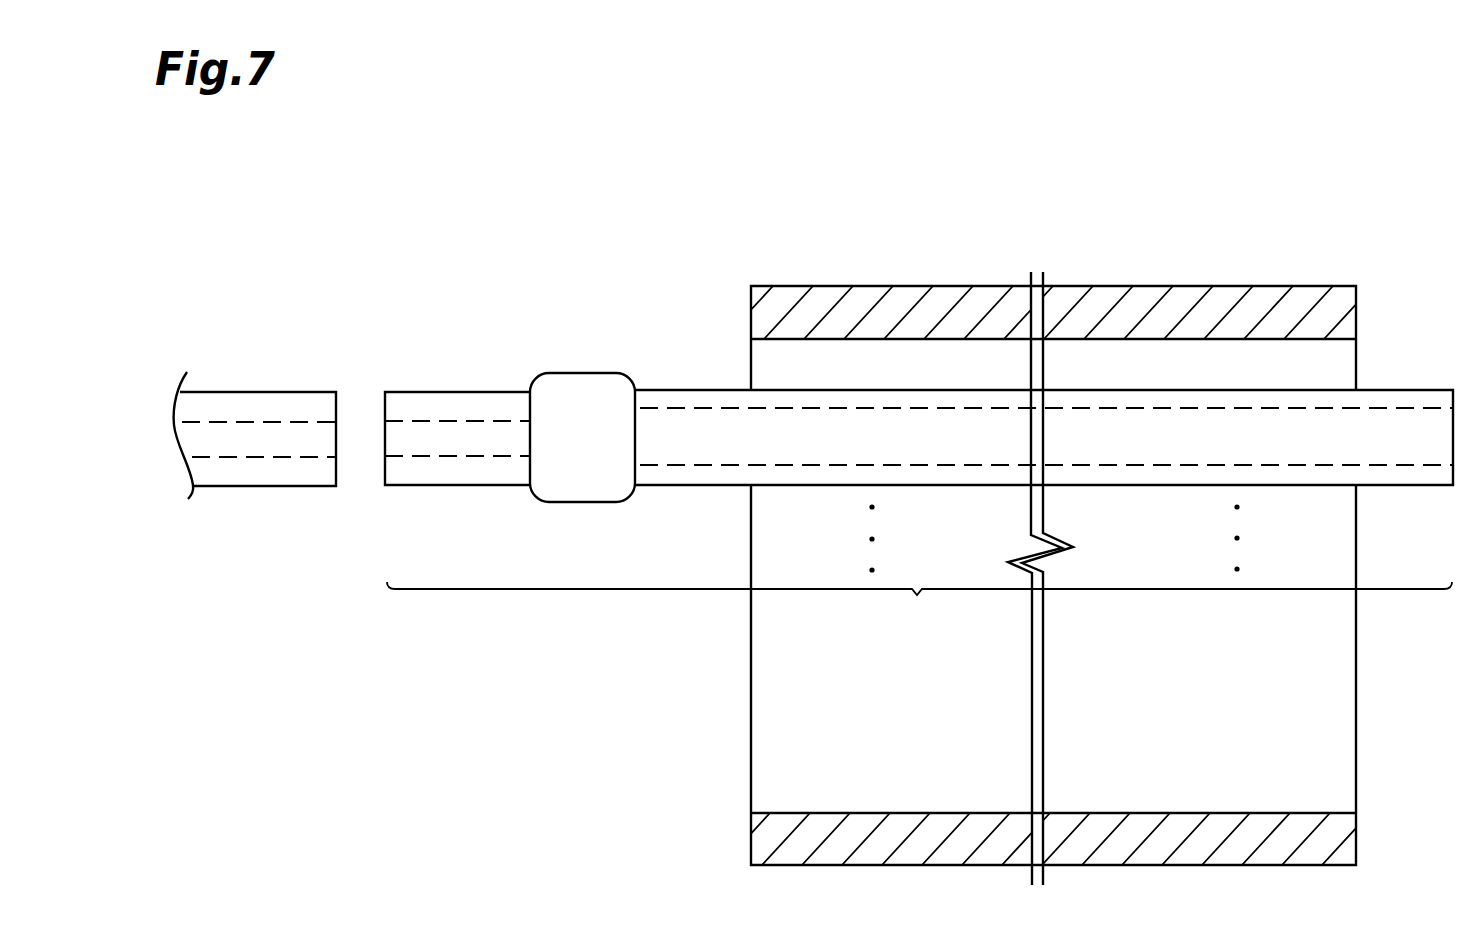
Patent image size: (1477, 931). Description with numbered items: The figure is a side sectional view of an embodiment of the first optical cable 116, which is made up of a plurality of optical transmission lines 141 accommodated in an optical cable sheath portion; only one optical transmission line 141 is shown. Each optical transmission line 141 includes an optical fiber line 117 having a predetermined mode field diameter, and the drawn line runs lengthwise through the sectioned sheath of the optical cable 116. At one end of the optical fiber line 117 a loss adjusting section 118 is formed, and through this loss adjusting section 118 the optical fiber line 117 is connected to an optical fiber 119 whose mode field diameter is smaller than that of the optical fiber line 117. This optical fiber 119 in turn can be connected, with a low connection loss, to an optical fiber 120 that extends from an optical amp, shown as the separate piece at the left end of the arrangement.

The optical cable 116 is at (902, 232).
The optical fiber line 117 is at (1412, 437).
The loss adjusting section 118 is at (587, 403).
The optical fiber 119 is at (445, 400).
The optical fiber 120 is at (288, 400).
The optical transmission line 141 is at (919, 610).